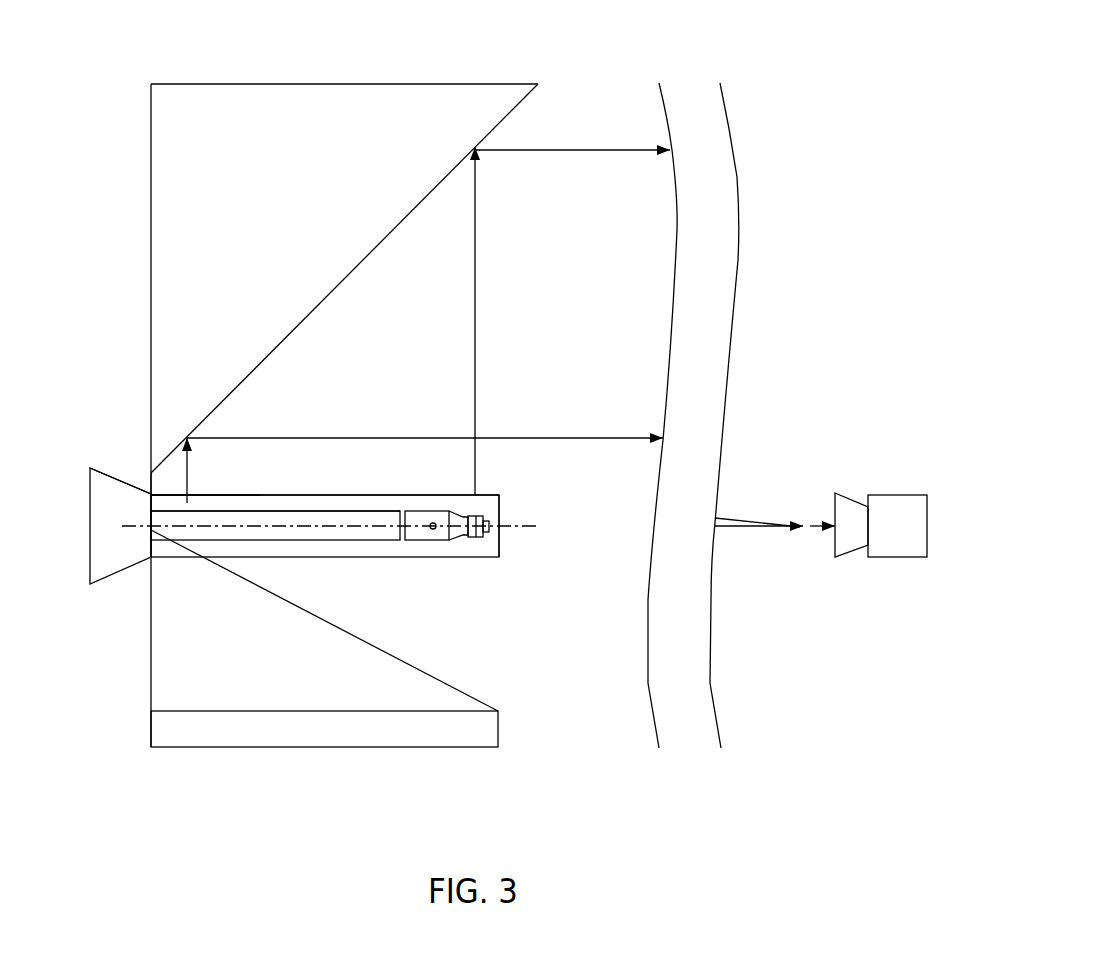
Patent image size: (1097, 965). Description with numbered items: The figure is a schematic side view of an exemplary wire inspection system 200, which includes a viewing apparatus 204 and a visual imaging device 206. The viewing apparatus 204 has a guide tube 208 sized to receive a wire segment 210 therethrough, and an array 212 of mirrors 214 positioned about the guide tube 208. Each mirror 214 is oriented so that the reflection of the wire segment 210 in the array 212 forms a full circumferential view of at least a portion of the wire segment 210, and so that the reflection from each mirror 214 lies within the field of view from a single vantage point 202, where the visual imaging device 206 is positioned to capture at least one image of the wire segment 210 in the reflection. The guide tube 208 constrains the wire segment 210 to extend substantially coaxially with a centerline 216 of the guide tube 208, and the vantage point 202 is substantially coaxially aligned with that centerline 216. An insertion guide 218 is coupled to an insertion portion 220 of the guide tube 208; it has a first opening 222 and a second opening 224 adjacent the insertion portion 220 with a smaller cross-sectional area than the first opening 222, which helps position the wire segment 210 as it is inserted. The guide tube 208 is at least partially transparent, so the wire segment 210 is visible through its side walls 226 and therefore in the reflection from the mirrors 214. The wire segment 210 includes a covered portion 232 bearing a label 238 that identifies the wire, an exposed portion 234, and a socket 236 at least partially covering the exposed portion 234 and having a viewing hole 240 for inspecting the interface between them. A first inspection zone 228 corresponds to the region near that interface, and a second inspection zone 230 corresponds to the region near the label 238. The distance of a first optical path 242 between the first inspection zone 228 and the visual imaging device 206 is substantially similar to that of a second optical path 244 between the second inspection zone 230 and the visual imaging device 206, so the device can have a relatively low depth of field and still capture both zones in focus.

The wire inspection system 200 is at (777, 62).
The vantage point 202 is at (887, 465).
The viewing apparatus 204 is at (132, 108).
The visual imaging device 206 is at (898, 557).
The guide tube 208 is at (499, 509).
The wire segment 210 is at (387, 511).
The array 212 is at (533, 65).
The mirror 214 is at (392, 84).
The centerline 216 is at (525, 527).
The insertion guide 218 is at (102, 472).
The insertion portion 220 is at (165, 485).
The first opening 222 is at (85, 515).
The second opening 224 is at (148, 482).
The side walls 226 is at (333, 495).
The first inspection zone 228 is at (472, 508).
The second inspection zone 230 is at (195, 507).
The covered portion 232 is at (288, 518).
The exposed portion 234 is at (403, 542).
The socket 236 is at (457, 537).
The label 238 is at (233, 542).
The viewing hole 240 is at (433, 530).
The first optical path 242 is at (475, 285).
The second optical path 244 is at (353, 437).